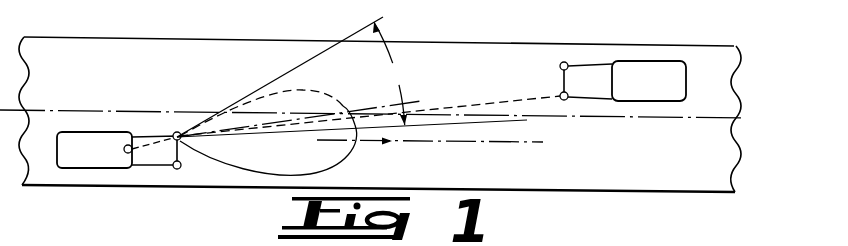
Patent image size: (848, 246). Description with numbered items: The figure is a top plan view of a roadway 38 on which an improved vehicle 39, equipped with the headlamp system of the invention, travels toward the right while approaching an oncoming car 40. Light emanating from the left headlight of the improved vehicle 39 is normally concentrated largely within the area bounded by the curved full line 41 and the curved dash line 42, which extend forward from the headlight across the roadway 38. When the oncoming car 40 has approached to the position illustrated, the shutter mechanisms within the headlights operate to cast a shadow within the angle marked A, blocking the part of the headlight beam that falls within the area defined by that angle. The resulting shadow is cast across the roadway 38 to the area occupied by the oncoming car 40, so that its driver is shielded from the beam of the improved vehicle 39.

The roadway 38 is at (577, 194).
The improved vehicle 39 is at (101, 157).
The oncoming car 40 is at (657, 88).
The curved full line 41 is at (253, 171).
The curved dash line 42 is at (303, 89).